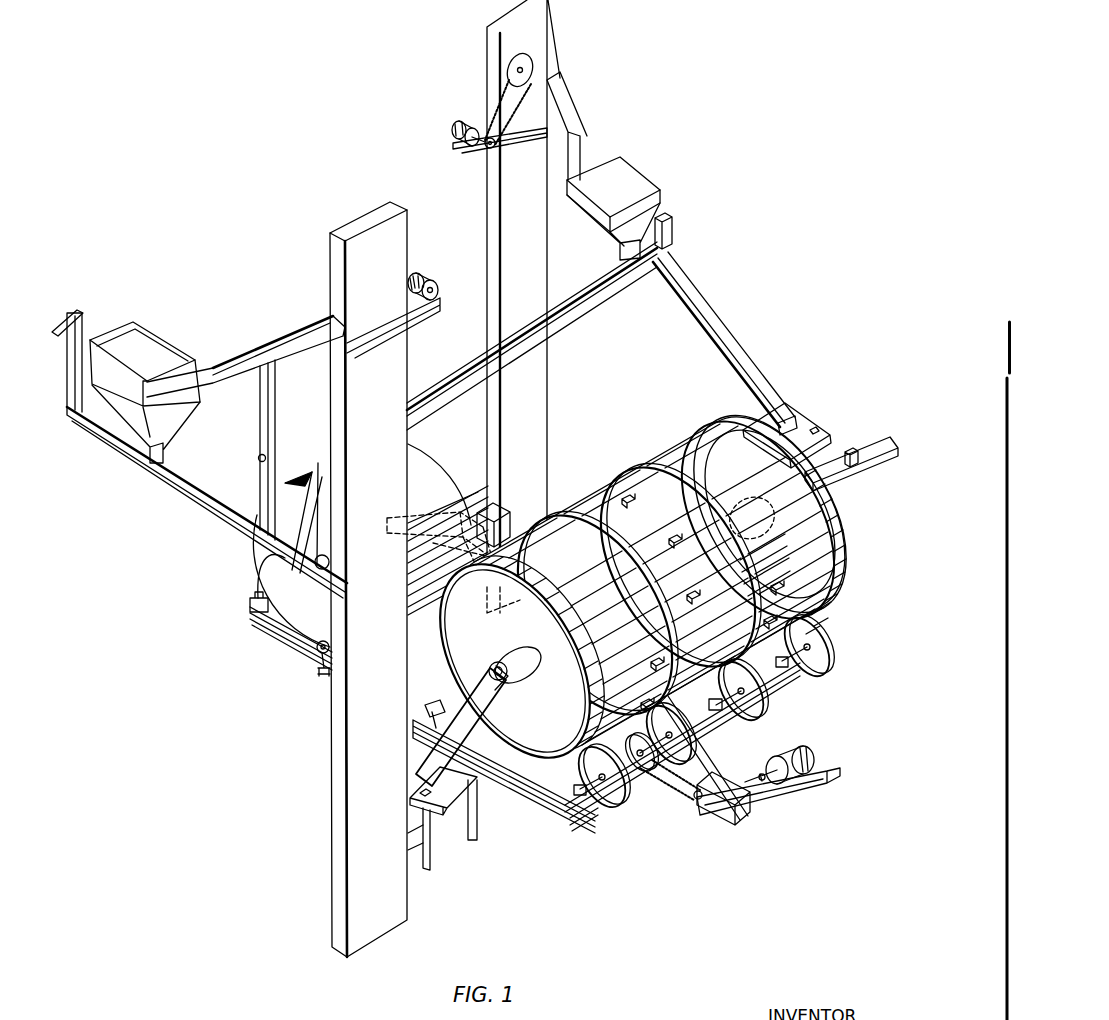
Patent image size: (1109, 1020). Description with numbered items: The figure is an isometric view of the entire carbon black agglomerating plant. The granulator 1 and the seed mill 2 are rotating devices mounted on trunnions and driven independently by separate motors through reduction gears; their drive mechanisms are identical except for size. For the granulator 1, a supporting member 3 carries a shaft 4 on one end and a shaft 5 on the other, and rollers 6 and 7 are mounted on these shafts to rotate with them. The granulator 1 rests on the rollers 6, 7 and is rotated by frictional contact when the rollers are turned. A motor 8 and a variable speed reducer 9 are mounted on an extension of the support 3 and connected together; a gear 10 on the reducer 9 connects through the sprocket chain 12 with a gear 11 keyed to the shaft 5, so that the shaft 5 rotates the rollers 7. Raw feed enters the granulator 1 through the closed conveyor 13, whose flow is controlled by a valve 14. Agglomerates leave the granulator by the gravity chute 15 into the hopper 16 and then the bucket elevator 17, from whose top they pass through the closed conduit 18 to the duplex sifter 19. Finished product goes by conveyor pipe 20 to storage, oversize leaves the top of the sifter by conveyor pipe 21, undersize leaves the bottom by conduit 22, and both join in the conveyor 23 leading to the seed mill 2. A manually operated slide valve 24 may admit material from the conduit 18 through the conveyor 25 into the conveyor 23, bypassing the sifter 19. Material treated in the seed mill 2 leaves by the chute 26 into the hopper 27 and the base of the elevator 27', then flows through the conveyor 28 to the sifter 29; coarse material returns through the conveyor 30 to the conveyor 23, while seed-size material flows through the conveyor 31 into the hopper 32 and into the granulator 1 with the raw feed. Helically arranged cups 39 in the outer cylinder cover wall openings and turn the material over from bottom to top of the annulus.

The granulator 1 is at (837, 538).
The seed mill 2 is at (308, 615).
The supporting member 3 is at (547, 800).
The shaft 4 is at (443, 698).
The shaft 5 is at (590, 817).
The rollers 6 is at (433, 732).
The rollers 7 is at (610, 795).
The motor 8 is at (793, 760).
The variable speed reducer 9 is at (740, 823).
The gear 10 is at (700, 810).
The gear 11 is at (643, 770).
The sprocket chain 12 is at (660, 777).
The closed conveyor 13 is at (877, 455).
The valve 14 is at (852, 450).
The gravity chute 15 is at (448, 742).
The hopper 16 is at (443, 803).
The bucket elevator 17 is at (375, 807).
The closed conduit 18 is at (287, 343).
The duplex sifter 19 is at (150, 353).
The conveyor pipe 20 is at (67, 313).
The conveyor pipe 21 is at (67, 410).
The conduit 22 is at (155, 435).
The conveyor 23 is at (220, 517).
The slide valve 24 is at (258, 462).
The conveyor 25 is at (270, 407).
The chute 26 is at (423, 530).
The hopper 27 is at (497, 534).
The elevator 27' is at (542, 300).
The conveyor 28 is at (573, 113).
The sifter 29 is at (620, 187).
The conveyor 30 is at (567, 308).
The conveyor 31 is at (710, 340).
The hopper 32 is at (800, 427).
The cups 39 is at (822, 593).